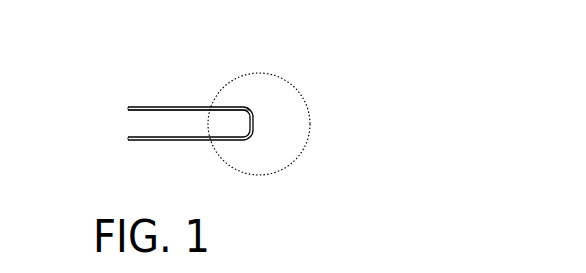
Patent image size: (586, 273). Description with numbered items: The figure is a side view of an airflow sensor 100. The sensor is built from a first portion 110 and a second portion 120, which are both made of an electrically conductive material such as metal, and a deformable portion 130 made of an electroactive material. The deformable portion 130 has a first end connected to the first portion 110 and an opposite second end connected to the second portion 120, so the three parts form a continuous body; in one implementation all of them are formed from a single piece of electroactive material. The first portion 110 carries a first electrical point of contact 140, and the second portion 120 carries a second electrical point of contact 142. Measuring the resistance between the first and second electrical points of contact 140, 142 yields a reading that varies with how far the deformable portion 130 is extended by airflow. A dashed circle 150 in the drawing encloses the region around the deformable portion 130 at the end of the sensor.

The airflow sensor 100 is at (340, 65).
The first portion 110 is at (167, 106).
The second portion 120 is at (183, 141).
The deformable portion 130 is at (272, 107).
The first electrical point of contact 140 is at (130, 109).
The second electrical point of contact 142 is at (131, 139).
The detail region 150 is at (310, 124).